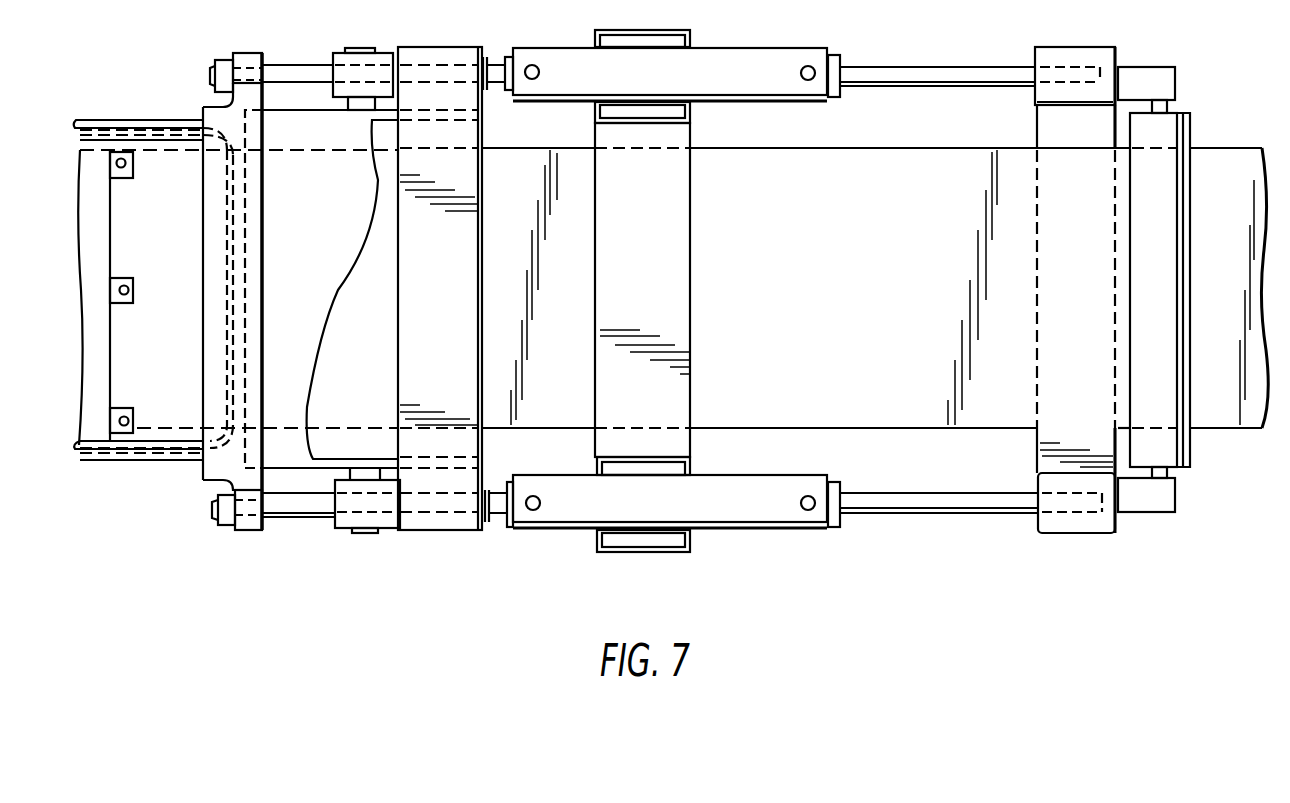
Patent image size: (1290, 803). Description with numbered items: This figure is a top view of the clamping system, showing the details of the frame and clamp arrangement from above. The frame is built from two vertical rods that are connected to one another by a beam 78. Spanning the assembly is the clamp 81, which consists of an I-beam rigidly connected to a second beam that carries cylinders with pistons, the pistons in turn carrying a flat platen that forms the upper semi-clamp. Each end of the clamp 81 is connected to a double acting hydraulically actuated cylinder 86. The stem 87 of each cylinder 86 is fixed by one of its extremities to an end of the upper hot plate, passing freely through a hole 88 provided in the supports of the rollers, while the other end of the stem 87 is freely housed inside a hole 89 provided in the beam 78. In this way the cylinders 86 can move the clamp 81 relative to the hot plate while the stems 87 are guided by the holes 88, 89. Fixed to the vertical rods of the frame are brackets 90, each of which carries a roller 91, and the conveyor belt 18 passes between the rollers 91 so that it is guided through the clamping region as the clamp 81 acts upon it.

The conveyor belt 18 is at (1222, 172).
The beam 78 is at (1038, 455).
The clamp 81 is at (673, 226).
The double acting hydraulically actuated cylinder 86 is at (733, 62).
The stem 87 is at (490, 63).
The hole 88 is at (428, 70).
The hole 89 is at (1065, 513).
The bracket 90 is at (1145, 80).
The roller 91 is at (1163, 449).